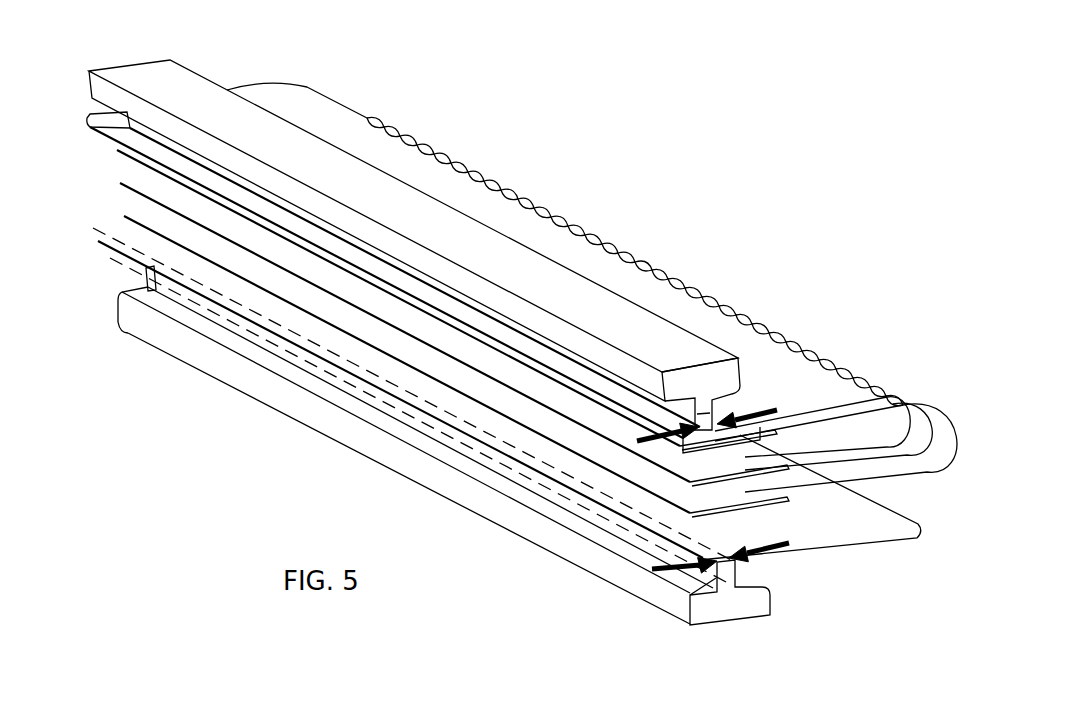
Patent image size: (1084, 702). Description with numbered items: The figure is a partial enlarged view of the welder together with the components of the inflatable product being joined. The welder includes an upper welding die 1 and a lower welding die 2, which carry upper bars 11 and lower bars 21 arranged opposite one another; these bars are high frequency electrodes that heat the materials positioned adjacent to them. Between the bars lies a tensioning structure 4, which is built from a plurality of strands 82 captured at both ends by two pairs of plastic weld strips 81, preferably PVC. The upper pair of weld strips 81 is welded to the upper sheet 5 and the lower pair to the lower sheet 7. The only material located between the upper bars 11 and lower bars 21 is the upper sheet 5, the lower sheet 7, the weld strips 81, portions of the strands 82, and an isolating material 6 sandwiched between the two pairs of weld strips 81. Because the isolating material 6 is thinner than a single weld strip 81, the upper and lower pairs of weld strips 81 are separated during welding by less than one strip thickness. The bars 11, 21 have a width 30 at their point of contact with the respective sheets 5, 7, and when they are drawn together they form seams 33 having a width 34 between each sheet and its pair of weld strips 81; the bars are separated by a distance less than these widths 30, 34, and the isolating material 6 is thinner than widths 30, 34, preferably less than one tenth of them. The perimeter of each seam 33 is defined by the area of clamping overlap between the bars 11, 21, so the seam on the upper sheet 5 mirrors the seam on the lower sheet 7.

The upper welding die 1 is at (186, 88).
The lower welding die 2 is at (243, 377).
The tensioning structures 4 is at (622, 170).
The upper sheet 5 is at (343, 118).
The isolating material 6 is at (120, 183).
The lower sheet 7 is at (190, 282).
The upper bars 11 is at (733, 410).
The lower bars 21 is at (705, 575).
The width 30 is at (712, 408).
The seams 33 is at (464, 425).
The width 34 is at (776, 546).
The weld strips 81 is at (117, 150).
The strands 82 is at (508, 180).